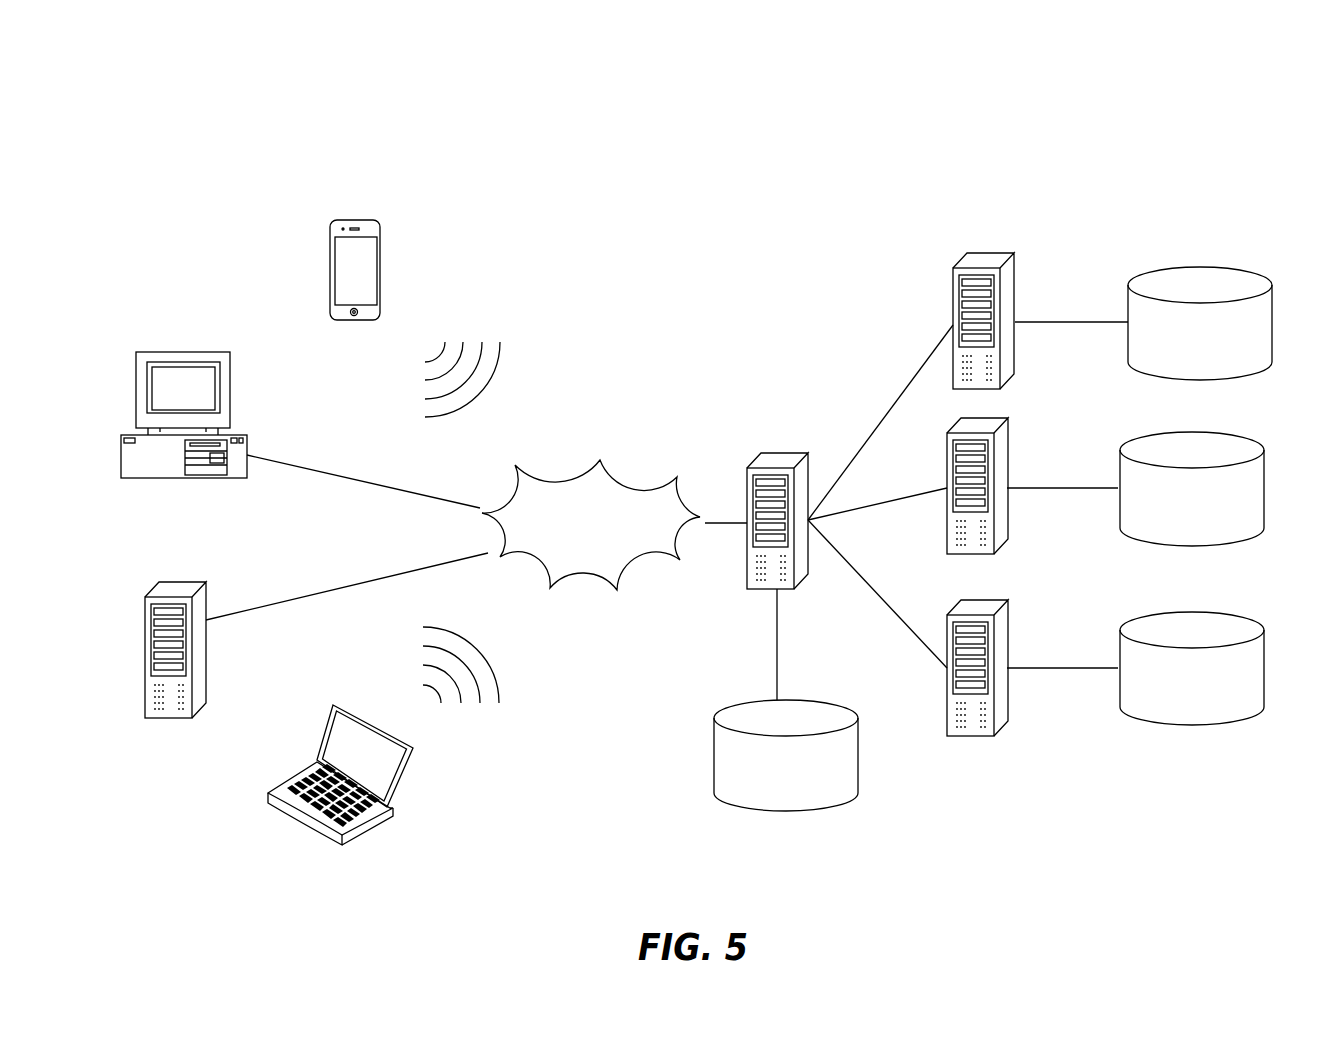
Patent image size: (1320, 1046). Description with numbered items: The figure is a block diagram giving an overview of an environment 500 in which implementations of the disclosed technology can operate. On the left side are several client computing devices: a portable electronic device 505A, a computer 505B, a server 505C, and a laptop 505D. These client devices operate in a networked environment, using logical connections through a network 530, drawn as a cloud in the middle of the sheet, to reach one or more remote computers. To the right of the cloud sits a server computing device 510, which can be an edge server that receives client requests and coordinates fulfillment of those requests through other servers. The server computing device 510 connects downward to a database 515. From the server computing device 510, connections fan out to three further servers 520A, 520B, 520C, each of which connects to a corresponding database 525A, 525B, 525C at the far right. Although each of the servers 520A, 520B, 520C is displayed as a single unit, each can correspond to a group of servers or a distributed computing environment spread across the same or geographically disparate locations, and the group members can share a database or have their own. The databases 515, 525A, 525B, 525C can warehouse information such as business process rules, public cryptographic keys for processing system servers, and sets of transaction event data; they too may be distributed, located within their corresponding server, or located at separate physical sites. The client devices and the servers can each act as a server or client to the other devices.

The environment 500 is at (1080, 131).
The portable electronic device 505A is at (378, 222).
The computer 505B is at (228, 352).
The server 505C is at (197, 582).
The laptop 505D is at (408, 777).
The network 530 is at (647, 444).
The server computing device 510 is at (788, 452).
The database 515 is at (837, 703).
The server 520A is at (1017, 258).
The server 520B is at (1009, 420).
The server 520C is at (1009, 600).
The database 525A is at (1197, 265).
The database 525B is at (1188, 428).
The database 525C is at (1188, 608).